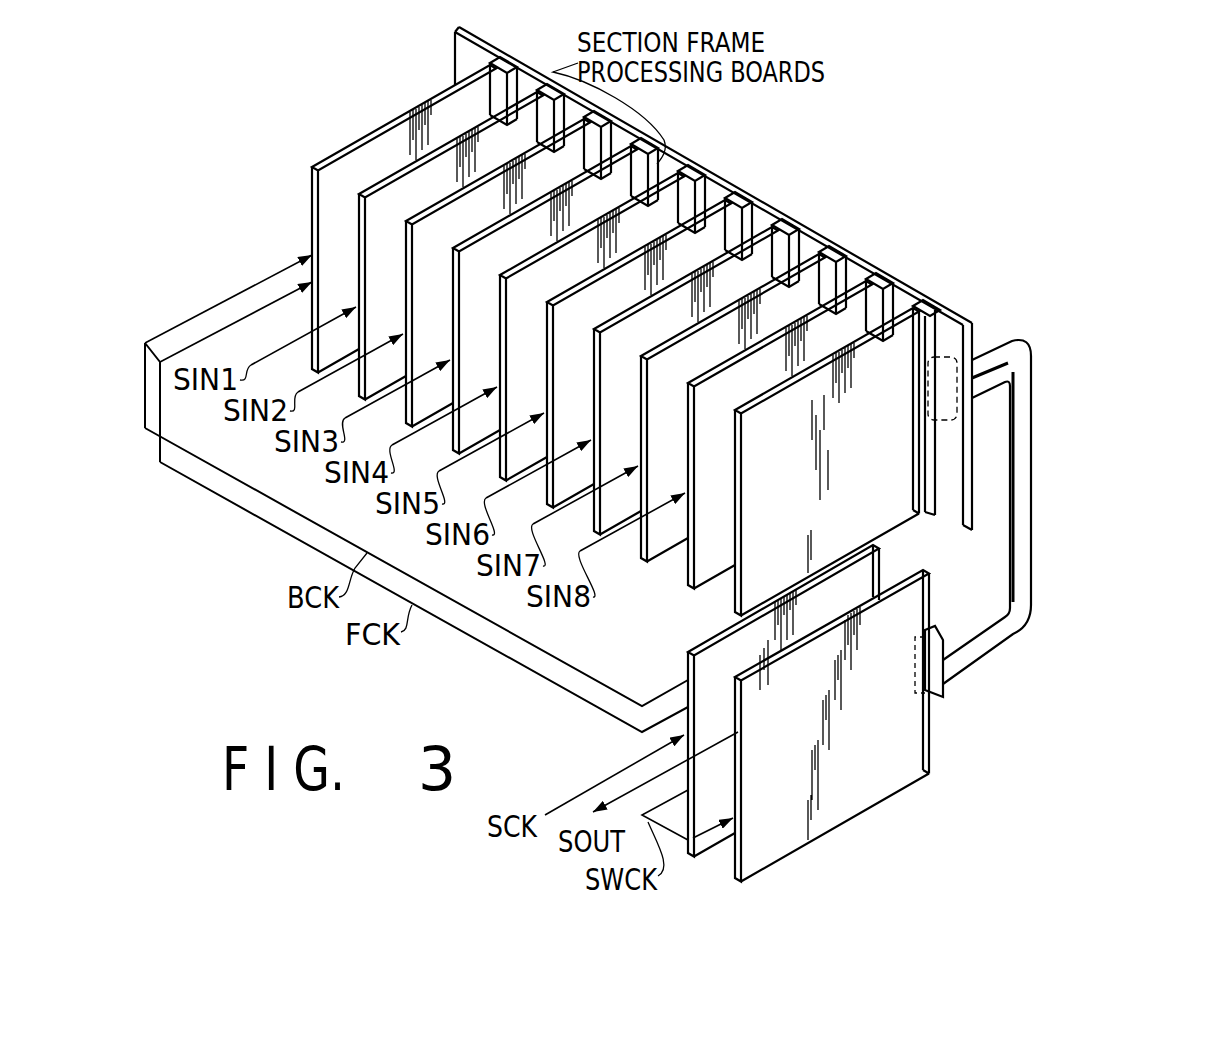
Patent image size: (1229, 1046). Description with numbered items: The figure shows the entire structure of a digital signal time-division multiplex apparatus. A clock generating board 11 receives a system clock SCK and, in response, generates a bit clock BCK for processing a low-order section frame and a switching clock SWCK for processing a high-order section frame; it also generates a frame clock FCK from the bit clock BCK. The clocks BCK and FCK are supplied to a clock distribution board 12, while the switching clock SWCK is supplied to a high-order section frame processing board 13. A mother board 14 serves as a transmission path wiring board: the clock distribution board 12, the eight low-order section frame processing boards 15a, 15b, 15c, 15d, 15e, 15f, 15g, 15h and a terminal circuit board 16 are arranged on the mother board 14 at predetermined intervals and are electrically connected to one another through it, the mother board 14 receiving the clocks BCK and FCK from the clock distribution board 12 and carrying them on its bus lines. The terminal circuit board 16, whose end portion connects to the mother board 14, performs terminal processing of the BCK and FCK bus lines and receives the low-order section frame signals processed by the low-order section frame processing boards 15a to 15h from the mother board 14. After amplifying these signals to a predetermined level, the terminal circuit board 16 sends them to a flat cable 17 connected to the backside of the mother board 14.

The clock generating board 11 is at (877, 563).
The clock distribution board 12 is at (287, 206).
The high-order section frame processing board 13 is at (851, 816).
The mother board 14 is at (393, 47).
The low-order section frame processing board 15a is at (359, 375).
The low-order section frame processing board 15b is at (406, 402).
The low-order section frame processing board 15c is at (453, 429).
The low-order section frame processing board 15d is at (500, 456).
The low-order section frame processing board 15e is at (547, 483).
The low-order section frame processing board 15f is at (594, 510).
The low-order section frame processing board 15g is at (641, 537).
The low-order section frame processing board 15h is at (688, 564).
The terminal circuit board 16 is at (737, 590).
The flat cable 17 is at (1031, 500).